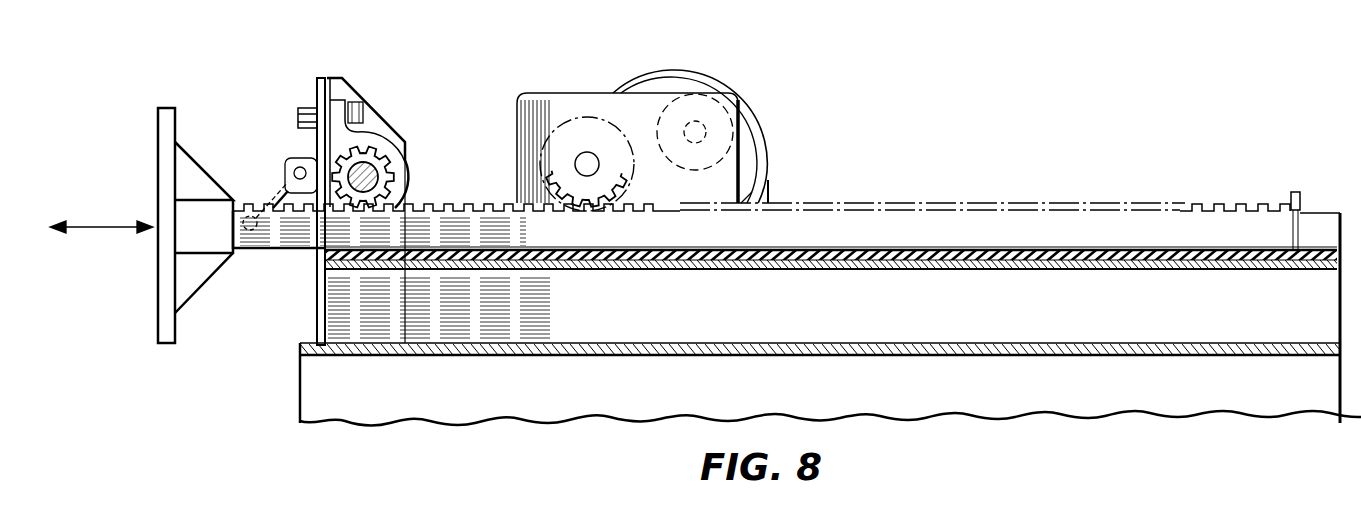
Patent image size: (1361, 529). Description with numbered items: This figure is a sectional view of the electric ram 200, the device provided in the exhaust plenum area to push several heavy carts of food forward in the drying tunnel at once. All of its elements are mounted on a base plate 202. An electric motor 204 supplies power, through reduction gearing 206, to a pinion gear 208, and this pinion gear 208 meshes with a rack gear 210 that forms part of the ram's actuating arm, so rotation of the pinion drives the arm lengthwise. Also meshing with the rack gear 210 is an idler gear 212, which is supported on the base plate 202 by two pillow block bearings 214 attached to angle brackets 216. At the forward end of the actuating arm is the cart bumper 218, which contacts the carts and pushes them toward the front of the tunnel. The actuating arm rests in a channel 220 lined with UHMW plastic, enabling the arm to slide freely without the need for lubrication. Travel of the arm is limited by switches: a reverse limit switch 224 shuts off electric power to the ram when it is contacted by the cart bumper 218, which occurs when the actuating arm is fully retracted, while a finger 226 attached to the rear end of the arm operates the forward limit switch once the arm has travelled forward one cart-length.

The electric ram 200 is at (843, 128).
The base plate 202 is at (752, 343).
The electric motor 204 is at (752, 85).
The reduction gearing 206 is at (515, 108).
The pinion gear 208 is at (583, 140).
The rack gear 210 is at (863, 203).
The idler gear 212 is at (380, 181).
The pillow block bearings 214 is at (388, 152).
The angle brackets 216 is at (330, 78).
The cart bumper 218 is at (158, 141).
The channel 220 is at (970, 268).
The reverse limit switch 224 is at (290, 162).
The finger 226 is at (1292, 197).